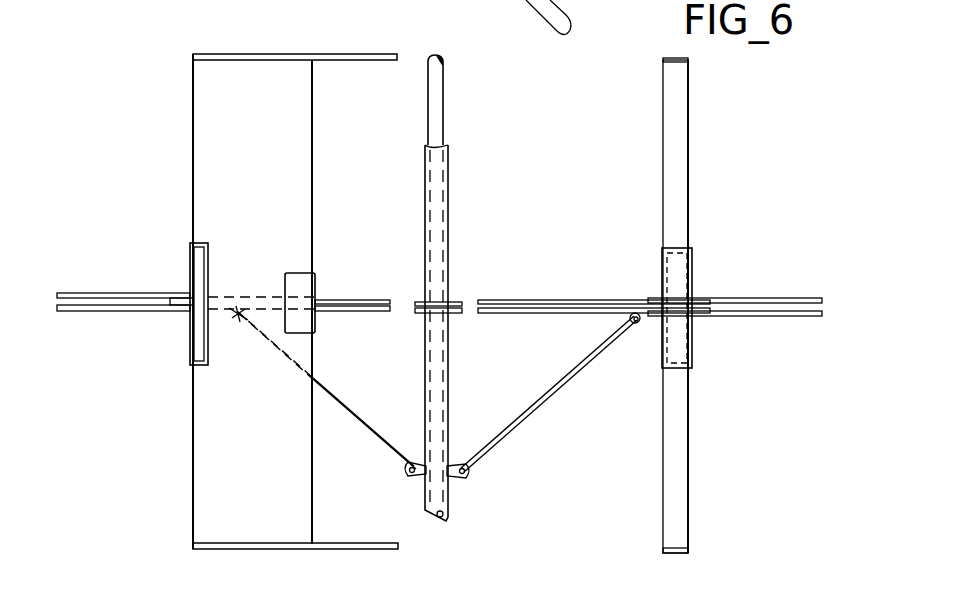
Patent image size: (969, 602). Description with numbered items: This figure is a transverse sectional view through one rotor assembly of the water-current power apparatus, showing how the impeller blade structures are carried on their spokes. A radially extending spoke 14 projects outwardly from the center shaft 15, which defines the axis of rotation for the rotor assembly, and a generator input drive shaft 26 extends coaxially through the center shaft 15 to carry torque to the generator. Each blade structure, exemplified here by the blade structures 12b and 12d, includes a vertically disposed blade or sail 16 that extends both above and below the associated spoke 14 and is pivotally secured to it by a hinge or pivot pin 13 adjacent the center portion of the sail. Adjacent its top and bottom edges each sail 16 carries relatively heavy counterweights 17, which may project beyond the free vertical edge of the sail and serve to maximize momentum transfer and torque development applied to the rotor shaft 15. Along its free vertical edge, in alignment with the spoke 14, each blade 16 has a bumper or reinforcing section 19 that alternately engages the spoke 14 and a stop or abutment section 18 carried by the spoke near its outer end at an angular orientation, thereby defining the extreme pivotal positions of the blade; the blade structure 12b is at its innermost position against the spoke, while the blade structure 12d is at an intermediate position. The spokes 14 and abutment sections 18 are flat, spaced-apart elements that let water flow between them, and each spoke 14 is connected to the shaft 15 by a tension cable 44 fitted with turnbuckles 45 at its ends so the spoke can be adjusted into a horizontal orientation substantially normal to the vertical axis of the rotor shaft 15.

The impeller blade structure 12b is at (193, 121).
The impeller blade structure 12d is at (688, 137).
The hinge or pivot pin 13 is at (197, 270).
The spoke 14 is at (355, 300).
The center shaft 15 is at (450, 200).
The blade or sail 16 is at (211, 184).
The counterweight 17 is at (385, 55).
The stop or abutment section 18 is at (125, 312).
The bumper or reinforcing section 19 is at (298, 273).
The generator input drive shaft 26 is at (445, 100).
The tension cable 44 is at (585, 365).
The turnbuckle 45 is at (462, 462).